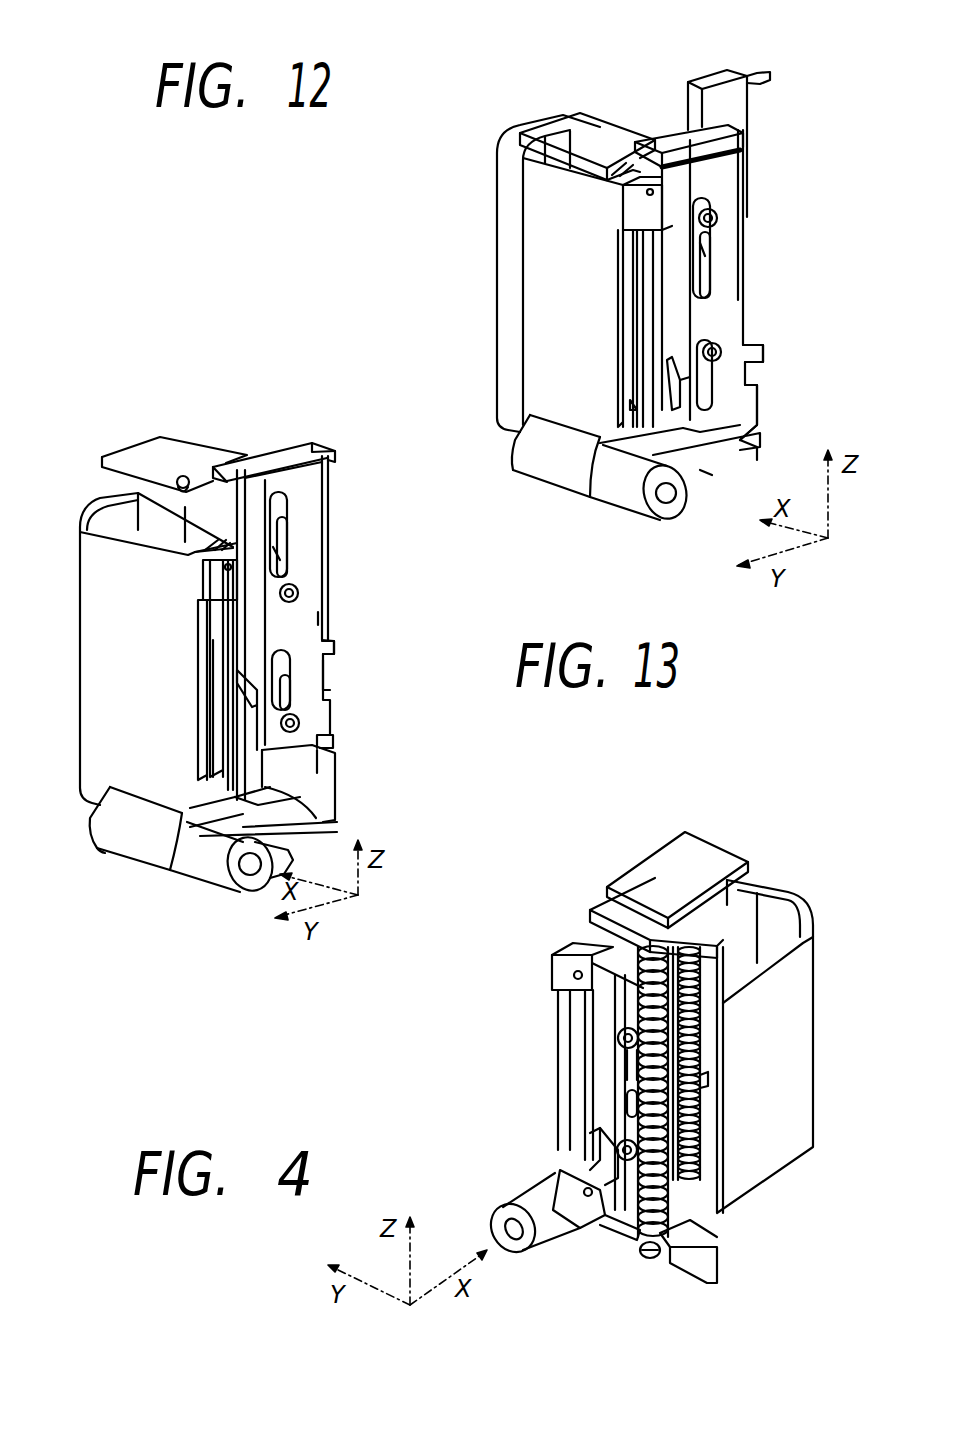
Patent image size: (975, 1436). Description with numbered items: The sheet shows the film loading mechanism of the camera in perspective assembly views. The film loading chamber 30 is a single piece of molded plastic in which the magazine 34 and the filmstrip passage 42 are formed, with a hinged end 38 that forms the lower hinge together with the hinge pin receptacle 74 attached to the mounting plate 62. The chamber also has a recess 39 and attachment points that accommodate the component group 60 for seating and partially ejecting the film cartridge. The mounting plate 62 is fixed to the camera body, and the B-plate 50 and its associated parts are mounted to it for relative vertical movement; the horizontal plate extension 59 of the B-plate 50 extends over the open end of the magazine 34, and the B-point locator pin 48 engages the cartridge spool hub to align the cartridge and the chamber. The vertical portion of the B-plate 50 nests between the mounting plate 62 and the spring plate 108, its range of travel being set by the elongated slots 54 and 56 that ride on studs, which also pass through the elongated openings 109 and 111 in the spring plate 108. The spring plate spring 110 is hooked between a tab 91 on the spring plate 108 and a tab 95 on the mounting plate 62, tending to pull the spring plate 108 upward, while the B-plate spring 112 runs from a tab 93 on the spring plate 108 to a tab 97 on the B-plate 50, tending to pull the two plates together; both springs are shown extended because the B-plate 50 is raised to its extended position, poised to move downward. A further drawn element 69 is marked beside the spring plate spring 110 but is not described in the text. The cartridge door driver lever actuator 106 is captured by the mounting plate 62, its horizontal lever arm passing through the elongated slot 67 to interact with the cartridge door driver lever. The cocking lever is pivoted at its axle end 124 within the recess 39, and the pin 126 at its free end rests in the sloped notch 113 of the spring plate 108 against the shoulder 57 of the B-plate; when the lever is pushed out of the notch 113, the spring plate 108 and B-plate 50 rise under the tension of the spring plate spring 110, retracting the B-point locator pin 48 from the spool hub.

In FIG. 12, the film loading chamber 30 is at (80, 527).
In FIG. 13, the film loading chamber 30 is at (513, 128).
In FIG. 4, the film loading chamber 30 is at (800, 993).
In FIG. 4, the magazine 34 is at (780, 913).
In FIG. 12, the hinged end 38 is at (108, 838).
In FIG. 13, the hinged end 38 is at (553, 477).
In FIG. 12, the recess 39 is at (198, 575).
In FIG. 13, the recess 39 is at (647, 203).
In FIG. 4, the recess 39 is at (585, 945).
In FIG. 12, the filmstrip passage 42 is at (217, 627).
In FIG. 13, the filmstrip passage 42 is at (640, 252).
In FIG. 4, the filmstrip passage 42 is at (570, 1003).
In FIG. 12, the B-point locator pin 48 is at (187, 476).
In FIG. 12, the B-plate 50 is at (204, 453).
In FIG. 13, the B-plate 50 is at (600, 104).
In FIG. 4, the B-plate 50 is at (729, 842).
In FIG. 12, the elongated slot 54 is at (274, 548).
In FIG. 13, the elongated slot 54 is at (713, 244).
In FIG. 12, the elongated slot 56 is at (291, 684).
In FIG. 13, the elongated slot 56 is at (752, 442).
In FIG. 12, the shoulder 57 is at (218, 733).
In FIG. 12, the horizontal plate extension 59 is at (130, 448).
In FIG. 13, the horizontal plate extension 59 is at (613, 133).
In FIG. 4, the horizontal plate extension 59 is at (653, 870).
In FIG. 12, the component group 60 is at (300, 590).
In FIG. 13, the component group 60 is at (720, 212).
In FIG. 4, the component group 60 is at (617, 1038).
In FIG. 12, the mounting plate 62 is at (290, 447).
In FIG. 13, the mounting plate 62 is at (713, 73).
In FIG. 4, the mounting plate 62 is at (693, 937).
In FIG. 12, the elongated slot 67 is at (255, 866).
In FIG. 4, the spring marker 69 is at (710, 1080).
In FIG. 12, the hinge pin receptacle 74 is at (208, 870).
In FIG. 13, the hinge pin receptacle 74 is at (640, 507).
In FIG. 4, the hinge pin receptacle 74 is at (490, 1240).
In FIG. 12, the tab 91 is at (331, 648).
In FIG. 13, the tab 91 is at (764, 357).
In FIG. 12, the tab 93 is at (333, 744).
In FIG. 13, the tab 93 is at (753, 447).
In FIG. 13, the tab 95 is at (760, 80).
In FIG. 13, the tab 97 is at (760, 140).
In FIG. 12, the cartridge door driver lever actuator 106 is at (327, 783).
In FIG. 4, the cartridge door driver lever actuator 106 is at (700, 1240).
In FIG. 12, the spring plate 108 is at (307, 553).
In FIG. 13, the spring plate 108 is at (727, 314).
In FIG. 4, the spring plate 108 is at (603, 1237).
In FIG. 12, the elongated opening 109 is at (310, 487).
In FIG. 13, the elongated opening 109 is at (717, 290).
In FIG. 4, the elongated opening 109 is at (627, 1070).
In FIG. 4, the spring plate spring 110 is at (703, 1160).
In FIG. 12, the elongated opening 111 is at (318, 618).
In FIG. 13, the elongated opening 111 is at (707, 482).
In FIG. 4, the B-plate spring 112 is at (637, 1252).
In FIG. 12, the sloped notch 113 is at (238, 688).
In FIG. 13, the sloped notch 113 is at (665, 378).
In FIG. 4, the sloped notch 113 is at (590, 1133).
In FIG. 12, the axle end 124 is at (192, 556).
In FIG. 13, the axle end 124 is at (613, 187).
In FIG. 12, the pin 126 is at (317, 817).
In FIG. 13, the pin 126 is at (727, 400).
In FIG. 4, the pin 126 is at (565, 1243).